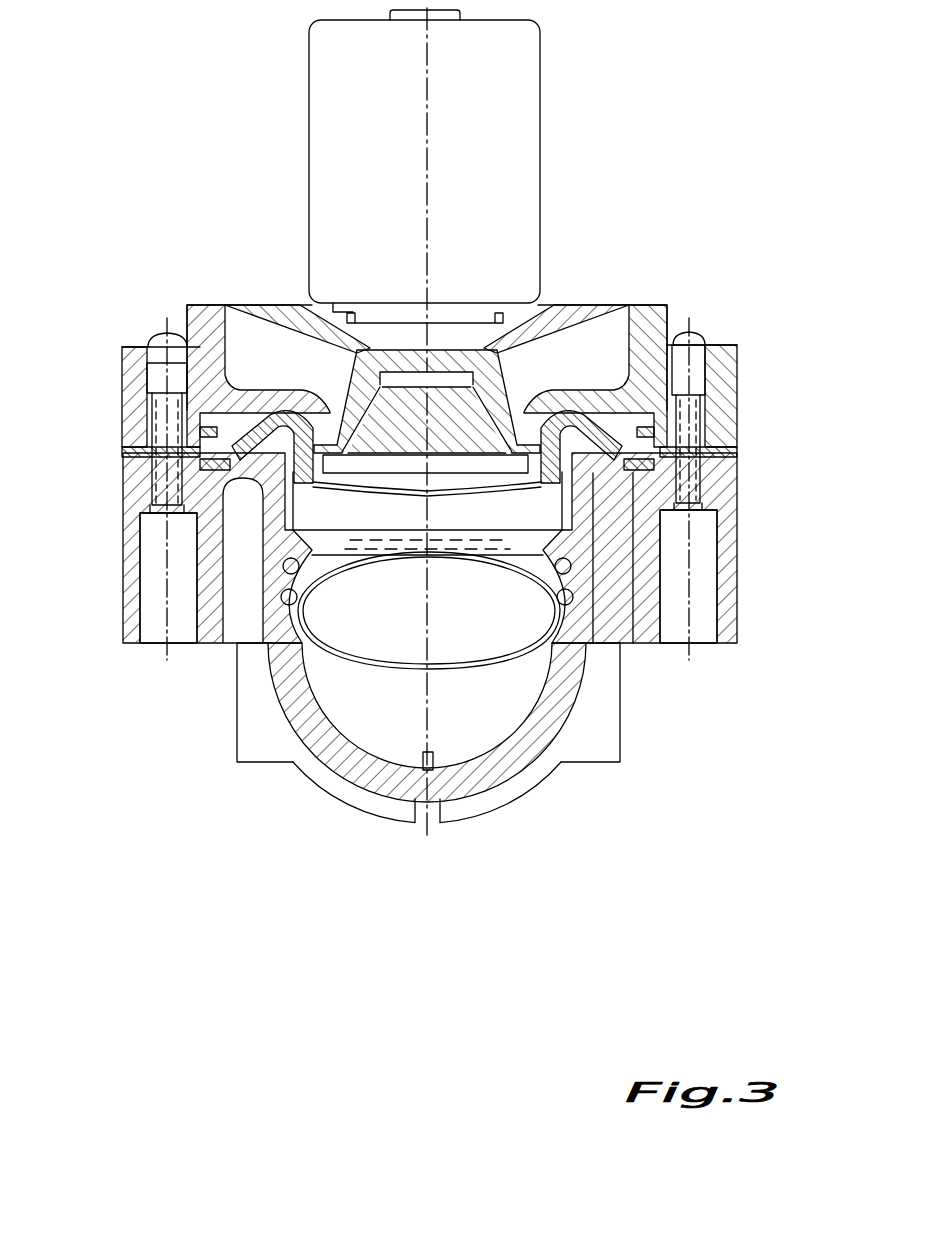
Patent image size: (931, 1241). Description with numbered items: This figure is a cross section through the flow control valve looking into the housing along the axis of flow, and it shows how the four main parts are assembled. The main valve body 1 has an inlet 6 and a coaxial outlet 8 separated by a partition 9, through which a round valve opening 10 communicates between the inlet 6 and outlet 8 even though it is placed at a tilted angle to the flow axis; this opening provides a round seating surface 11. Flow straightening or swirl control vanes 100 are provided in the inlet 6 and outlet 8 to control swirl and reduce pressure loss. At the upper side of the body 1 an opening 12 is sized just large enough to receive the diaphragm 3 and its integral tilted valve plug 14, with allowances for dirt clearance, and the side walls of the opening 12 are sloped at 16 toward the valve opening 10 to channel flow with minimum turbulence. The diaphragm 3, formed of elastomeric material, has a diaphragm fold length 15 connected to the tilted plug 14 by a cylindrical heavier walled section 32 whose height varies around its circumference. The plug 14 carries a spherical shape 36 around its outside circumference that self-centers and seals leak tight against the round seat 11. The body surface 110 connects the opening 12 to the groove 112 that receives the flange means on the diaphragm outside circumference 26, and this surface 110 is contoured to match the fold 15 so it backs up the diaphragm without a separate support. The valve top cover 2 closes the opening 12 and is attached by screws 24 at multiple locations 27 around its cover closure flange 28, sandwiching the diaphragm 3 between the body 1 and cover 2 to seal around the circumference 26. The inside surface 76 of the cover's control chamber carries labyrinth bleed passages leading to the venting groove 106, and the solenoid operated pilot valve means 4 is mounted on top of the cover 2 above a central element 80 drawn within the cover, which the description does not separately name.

The main valve body 1 is at (234, 732).
The valve top cover 2 is at (184, 302).
The diaphragm 3 is at (215, 510).
The solenoid operated pilot valve means 4 is at (546, 134).
The inlet 6 is at (495, 716).
The outlet 8 is at (405, 585).
The partition 9 is at (290, 663).
The valve opening 10 is at (556, 599).
The round seating surface 11 is at (402, 625).
The opening 12 is at (285, 560).
The valve plug 14 is at (510, 503).
The diaphragm fold length 15 is at (262, 485).
The sloped side walls 16 is at (255, 600).
The screws 24 is at (160, 340).
The diaphragm outside circumference 26 is at (200, 436).
The screw locations 27 is at (150, 375).
The cover closure flange 28 is at (200, 304).
The cylindrical heavier walled section 32 is at (235, 492).
The spherical shape 36 is at (703, 498).
The inside surface 76 is at (330, 415).
The armature core 80 is at (464, 387).
The flow straightening or swirl control vanes 100 is at (440, 748).
The venting groove 106 is at (192, 428).
The surface 110 is at (348, 447).
The groove 112 is at (165, 452).